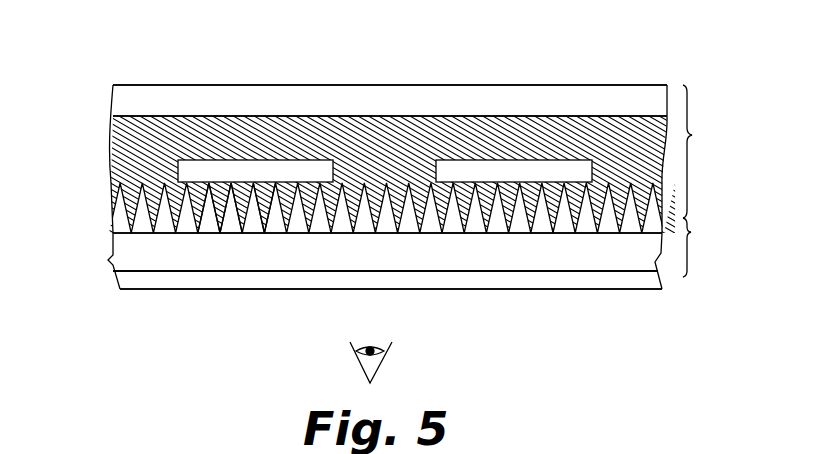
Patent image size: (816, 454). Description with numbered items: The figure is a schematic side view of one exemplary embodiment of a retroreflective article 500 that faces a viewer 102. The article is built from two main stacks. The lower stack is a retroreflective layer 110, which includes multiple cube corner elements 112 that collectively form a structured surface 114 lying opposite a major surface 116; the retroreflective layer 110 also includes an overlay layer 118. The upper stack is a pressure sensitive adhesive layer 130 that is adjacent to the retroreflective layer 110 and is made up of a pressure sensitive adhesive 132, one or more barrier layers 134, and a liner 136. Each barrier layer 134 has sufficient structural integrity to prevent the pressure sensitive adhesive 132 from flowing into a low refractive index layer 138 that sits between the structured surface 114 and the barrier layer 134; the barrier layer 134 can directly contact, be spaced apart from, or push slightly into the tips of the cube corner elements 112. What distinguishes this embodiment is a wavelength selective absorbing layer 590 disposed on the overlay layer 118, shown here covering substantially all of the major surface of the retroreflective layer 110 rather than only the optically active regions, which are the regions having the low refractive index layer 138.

The retroreflective article 500 is at (566, 72).
The pressure sensitive adhesive layer 130 is at (711, 151).
The retroreflective layer 110 is at (712, 247).
The liner 136 is at (130, 101).
The pressure sensitive adhesive 132 is at (128, 136).
The barrier layer 134 is at (247, 168).
The structured surface 114 is at (140, 203).
The cube corner elements 112 is at (229, 222).
The low refractive index layer 138 is at (266, 195).
The overlay layer 118 is at (123, 257).
The major surface 116 is at (563, 235).
The wavelength selective absorbing layer 590 is at (628, 282).
The viewer 102 is at (380, 362).